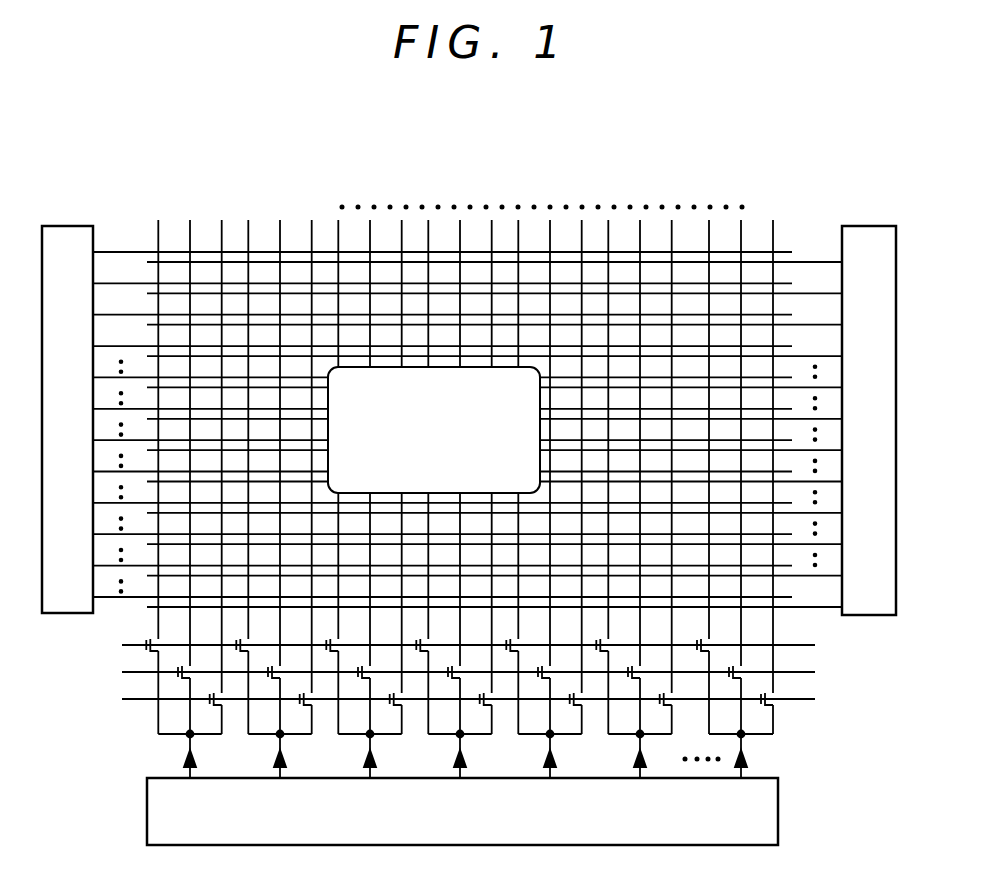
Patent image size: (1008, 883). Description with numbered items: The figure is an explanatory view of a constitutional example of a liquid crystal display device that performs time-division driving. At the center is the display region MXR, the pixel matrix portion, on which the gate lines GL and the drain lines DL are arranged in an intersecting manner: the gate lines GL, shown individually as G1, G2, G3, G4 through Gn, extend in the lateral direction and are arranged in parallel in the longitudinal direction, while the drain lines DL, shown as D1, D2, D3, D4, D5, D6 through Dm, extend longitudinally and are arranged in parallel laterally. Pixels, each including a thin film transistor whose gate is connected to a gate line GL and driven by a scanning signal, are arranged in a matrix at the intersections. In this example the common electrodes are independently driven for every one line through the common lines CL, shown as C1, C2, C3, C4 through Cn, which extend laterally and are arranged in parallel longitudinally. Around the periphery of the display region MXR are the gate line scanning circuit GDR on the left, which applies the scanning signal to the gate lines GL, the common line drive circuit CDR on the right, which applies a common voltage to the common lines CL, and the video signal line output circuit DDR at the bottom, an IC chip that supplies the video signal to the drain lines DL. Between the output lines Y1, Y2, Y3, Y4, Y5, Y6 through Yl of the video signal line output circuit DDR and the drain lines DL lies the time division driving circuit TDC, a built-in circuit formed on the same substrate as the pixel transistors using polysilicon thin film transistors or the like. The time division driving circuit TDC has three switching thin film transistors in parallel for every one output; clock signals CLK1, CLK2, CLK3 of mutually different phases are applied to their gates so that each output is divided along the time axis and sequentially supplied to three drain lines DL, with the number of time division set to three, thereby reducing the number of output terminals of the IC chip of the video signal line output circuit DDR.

The gate line scanning circuit GDR is at (67, 419).
The common line drive circuit CDR is at (869, 420).
The video signal line output circuit DDR is at (462, 811).
The display region MXR is at (434, 430).
The gate lines GL is at (137, 220).
The common lines CL is at (808, 212).
The drain lines DL is at (133, 191).
The time division driving circuit TDC is at (131, 731).
The clock signal CLK1 is at (438, 647).
The clock signal CLK2 is at (438, 674).
The clock signal CLK3 is at (438, 701).
The gate line G1 is at (442, 240).
The gate line G2 is at (442, 271).
The gate line G3 is at (442, 303).
The gate line G4 is at (442, 334).
The gate line Gn is at (442, 585).
The common line C1 is at (494, 252).
The common line C2 is at (494, 283).
The common line C3 is at (494, 315).
The common line C4 is at (494, 346).
The common line Cn is at (494, 597).
The drain line D1 is at (158, 465).
The drain line D2 is at (190, 487).
The drain line D3 is at (221, 465).
The drain line D4 is at (249, 465).
The drain line D5 is at (280, 487).
The drain line D6 is at (312, 465).
The drain line Dm is at (772, 465).
The output line Y1 is at (203, 751).
The output line Y2 is at (293, 751).
The output line Y3 is at (383, 751).
The output line Y4 is at (473, 751).
The output line Y5 is at (563, 751).
The output line Y6 is at (653, 751).
The output line Yl is at (750, 751).